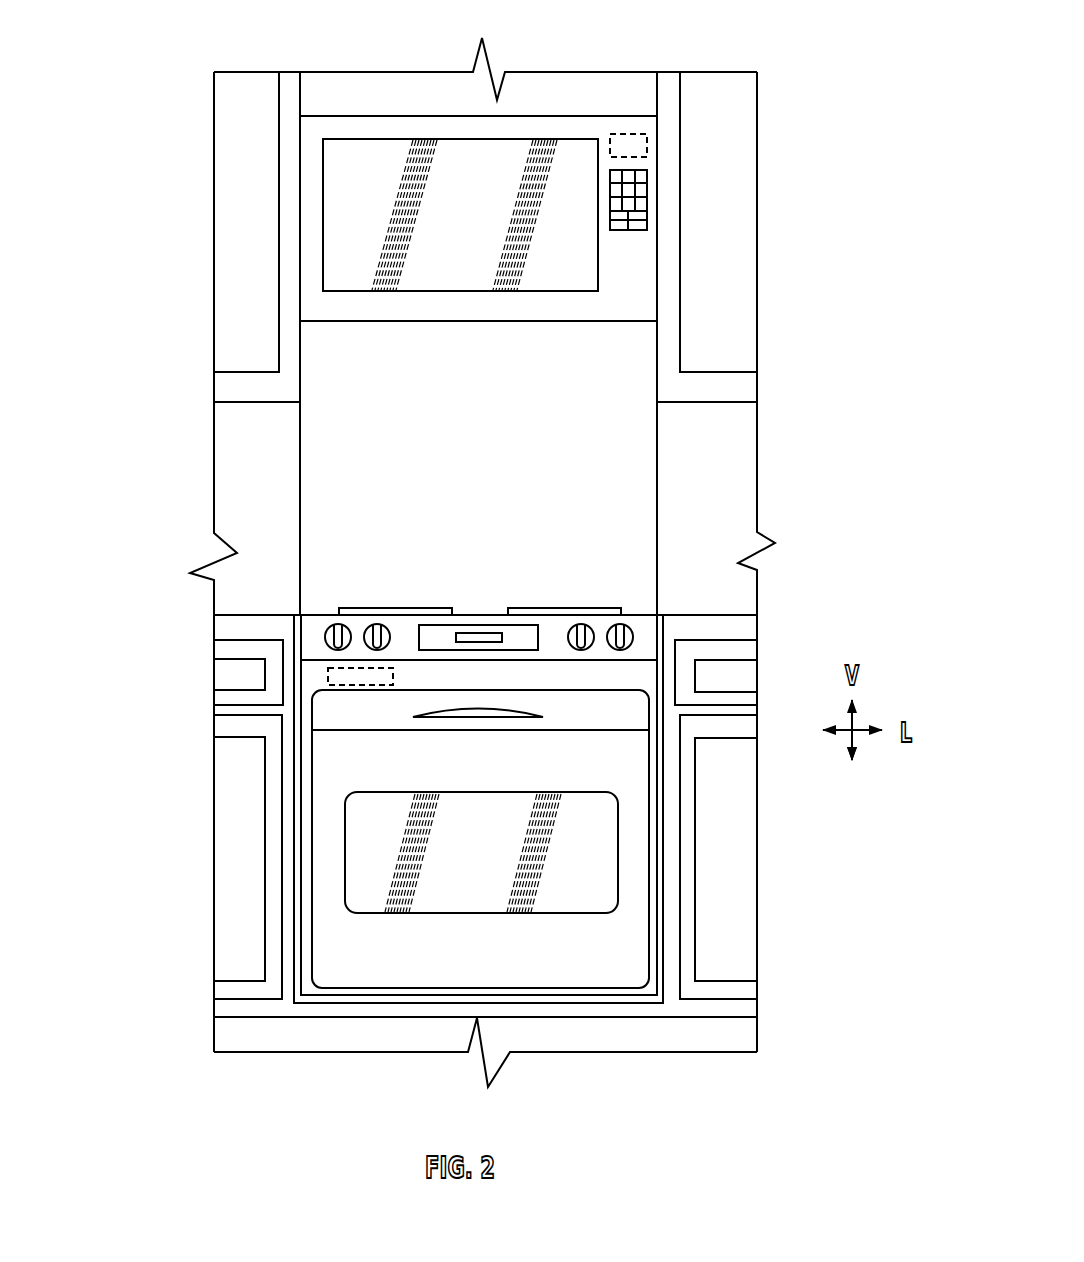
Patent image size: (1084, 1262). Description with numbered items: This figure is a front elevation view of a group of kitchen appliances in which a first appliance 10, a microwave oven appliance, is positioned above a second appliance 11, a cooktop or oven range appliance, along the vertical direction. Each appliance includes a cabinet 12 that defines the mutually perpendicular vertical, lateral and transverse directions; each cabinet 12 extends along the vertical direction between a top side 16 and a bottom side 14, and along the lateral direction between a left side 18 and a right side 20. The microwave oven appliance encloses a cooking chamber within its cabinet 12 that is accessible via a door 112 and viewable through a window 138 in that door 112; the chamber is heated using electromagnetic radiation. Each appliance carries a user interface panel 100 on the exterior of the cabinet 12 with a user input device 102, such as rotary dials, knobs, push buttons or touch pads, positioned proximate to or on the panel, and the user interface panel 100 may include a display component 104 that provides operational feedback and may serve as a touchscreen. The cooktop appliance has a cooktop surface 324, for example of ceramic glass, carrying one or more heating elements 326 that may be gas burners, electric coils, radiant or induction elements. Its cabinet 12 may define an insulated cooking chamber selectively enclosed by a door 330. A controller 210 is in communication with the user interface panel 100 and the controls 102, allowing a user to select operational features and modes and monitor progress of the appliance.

The first appliance 10 is at (165, 45).
The second appliance 11 is at (290, 800).
The cabinet 12 is at (642, 310).
The bottom side 14 is at (535, 321).
The top side 16 is at (400, 113).
The left side 18 is at (298, 243).
The right side 20 is at (657, 258).
The user interface panel 100 is at (640, 296).
The user input device 102 is at (647, 202).
The display component 104 is at (418, 633).
The door 112 is at (627, 125).
The window 138 is at (348, 208).
The controller 210 is at (647, 143).
The cooktop surface 324 is at (315, 611).
The heating elements 326 is at (522, 608).
The door 330 is at (635, 868).